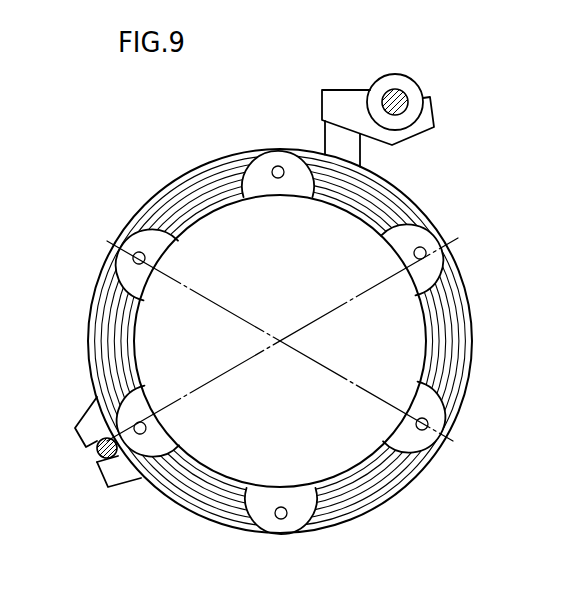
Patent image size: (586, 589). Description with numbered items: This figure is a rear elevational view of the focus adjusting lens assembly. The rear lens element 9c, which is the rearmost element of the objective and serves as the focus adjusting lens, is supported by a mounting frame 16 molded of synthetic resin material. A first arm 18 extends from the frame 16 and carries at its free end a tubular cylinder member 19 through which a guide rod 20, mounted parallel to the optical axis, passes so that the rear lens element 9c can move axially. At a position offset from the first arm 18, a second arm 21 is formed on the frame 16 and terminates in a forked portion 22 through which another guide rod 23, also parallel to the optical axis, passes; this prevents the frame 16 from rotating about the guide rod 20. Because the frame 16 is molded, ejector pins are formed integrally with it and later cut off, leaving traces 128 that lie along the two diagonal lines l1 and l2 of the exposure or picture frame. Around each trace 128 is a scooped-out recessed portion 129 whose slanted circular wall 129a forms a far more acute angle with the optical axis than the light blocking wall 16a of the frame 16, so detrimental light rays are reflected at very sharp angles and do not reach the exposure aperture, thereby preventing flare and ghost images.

The mounting frame 16 is at (465, 294).
The light blocking wall 16a is at (452, 336).
The first arm 18 is at (335, 133).
The cylinder member 19 is at (408, 78).
The guide rod 20 is at (393, 89).
The second arm 21 is at (135, 475).
The forked portion 22 is at (98, 462).
The guide rod 23 is at (97, 450).
The traces 128 is at (313, 367).
The recessed portion 129 is at (400, 448).
The slanted circular wall 129a is at (440, 425).
The diagonal line l1 is at (293, 329).
The diagonal line l2 is at (290, 355).
The rear lens element 9c is at (287, 410).